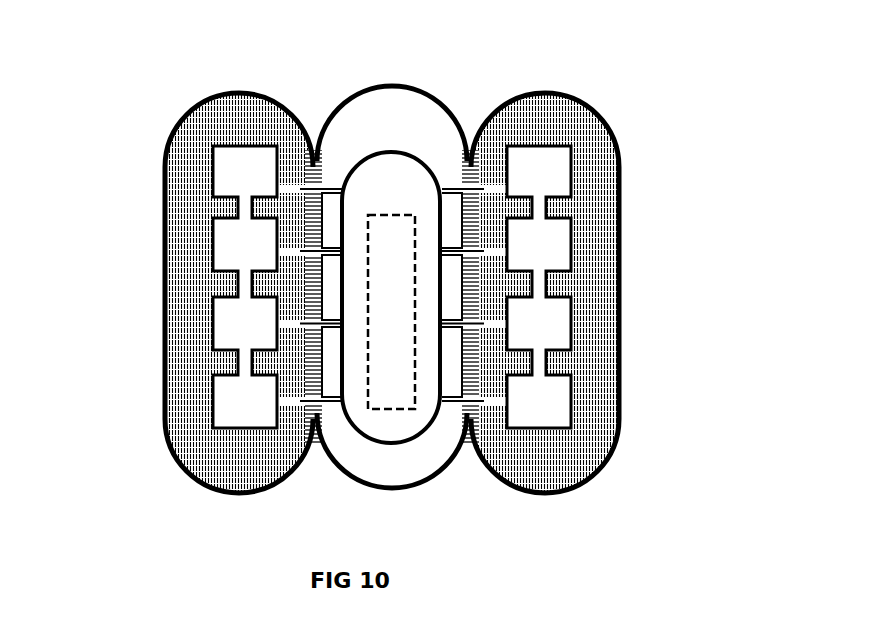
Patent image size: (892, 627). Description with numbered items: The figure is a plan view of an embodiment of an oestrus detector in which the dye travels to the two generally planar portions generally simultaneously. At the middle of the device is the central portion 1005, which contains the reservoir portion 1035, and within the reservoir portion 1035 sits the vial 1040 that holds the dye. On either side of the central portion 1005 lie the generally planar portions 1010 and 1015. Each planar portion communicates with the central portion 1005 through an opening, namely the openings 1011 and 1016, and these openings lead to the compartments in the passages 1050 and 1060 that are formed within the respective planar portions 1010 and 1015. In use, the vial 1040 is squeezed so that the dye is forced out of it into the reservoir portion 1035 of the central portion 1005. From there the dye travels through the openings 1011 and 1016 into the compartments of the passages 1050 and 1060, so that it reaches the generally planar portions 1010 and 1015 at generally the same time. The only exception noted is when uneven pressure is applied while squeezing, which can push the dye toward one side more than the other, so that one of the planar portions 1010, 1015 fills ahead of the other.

The central portion 1005 is at (358, 145).
The vial 1040 is at (397, 213).
The opening 1016 is at (485, 400).
The generally planar portion 1015 is at (603, 196).
The generally planar portion 1010 is at (192, 265).
The passage 1050 is at (210, 420).
The passage 1060 is at (570, 430).
The opening 1011 is at (326, 325).
The reservoir portion 1035 is at (420, 437).